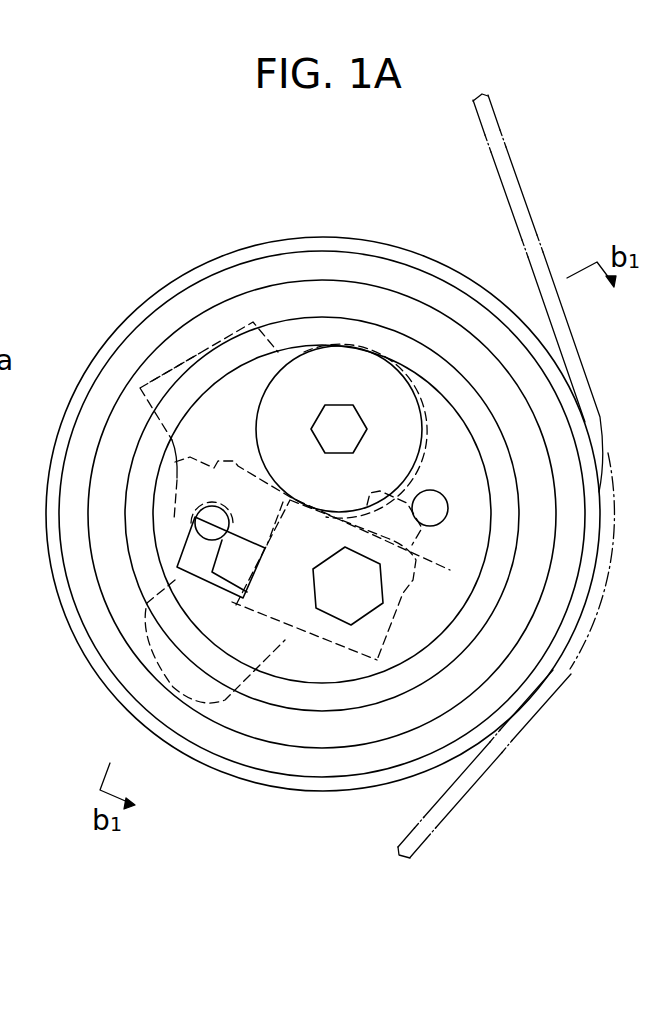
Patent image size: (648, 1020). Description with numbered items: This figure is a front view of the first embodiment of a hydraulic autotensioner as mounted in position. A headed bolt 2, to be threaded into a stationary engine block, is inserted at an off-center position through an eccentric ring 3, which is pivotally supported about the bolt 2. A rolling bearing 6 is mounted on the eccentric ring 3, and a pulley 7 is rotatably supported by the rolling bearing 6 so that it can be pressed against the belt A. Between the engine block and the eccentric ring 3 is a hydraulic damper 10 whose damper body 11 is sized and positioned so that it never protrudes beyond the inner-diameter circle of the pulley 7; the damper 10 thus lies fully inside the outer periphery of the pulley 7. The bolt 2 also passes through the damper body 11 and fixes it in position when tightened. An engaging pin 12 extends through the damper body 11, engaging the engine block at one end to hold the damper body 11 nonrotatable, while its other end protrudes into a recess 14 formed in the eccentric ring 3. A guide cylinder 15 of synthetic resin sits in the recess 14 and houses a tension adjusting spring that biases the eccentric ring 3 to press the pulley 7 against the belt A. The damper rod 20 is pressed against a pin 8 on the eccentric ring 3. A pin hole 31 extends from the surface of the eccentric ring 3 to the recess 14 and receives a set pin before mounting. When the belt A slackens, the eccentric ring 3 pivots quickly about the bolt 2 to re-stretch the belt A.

The headed bolt 2 is at (346, 365).
The eccentric ring 3 is at (454, 437).
The rolling bearing 6 is at (440, 288).
The pulley 7 is at (292, 246).
The pin 8 is at (437, 502).
The hydraulic damper 10 is at (203, 340).
The damper body 11 is at (168, 373).
The engaging pin 12 is at (200, 530).
The recess 14 is at (297, 625).
The guide cylinder 15 is at (367, 652).
The rod 20 is at (547, 647).
The pin hole 31 is at (185, 586).
The belt A is at (513, 192).